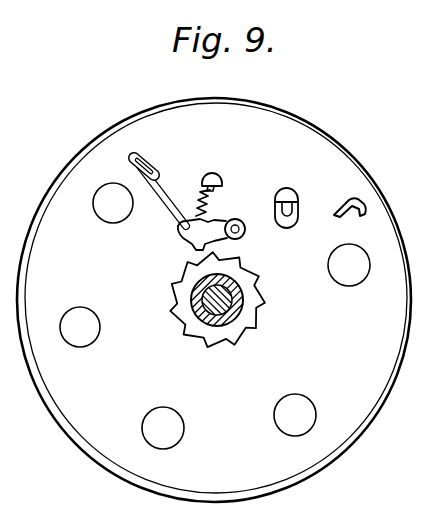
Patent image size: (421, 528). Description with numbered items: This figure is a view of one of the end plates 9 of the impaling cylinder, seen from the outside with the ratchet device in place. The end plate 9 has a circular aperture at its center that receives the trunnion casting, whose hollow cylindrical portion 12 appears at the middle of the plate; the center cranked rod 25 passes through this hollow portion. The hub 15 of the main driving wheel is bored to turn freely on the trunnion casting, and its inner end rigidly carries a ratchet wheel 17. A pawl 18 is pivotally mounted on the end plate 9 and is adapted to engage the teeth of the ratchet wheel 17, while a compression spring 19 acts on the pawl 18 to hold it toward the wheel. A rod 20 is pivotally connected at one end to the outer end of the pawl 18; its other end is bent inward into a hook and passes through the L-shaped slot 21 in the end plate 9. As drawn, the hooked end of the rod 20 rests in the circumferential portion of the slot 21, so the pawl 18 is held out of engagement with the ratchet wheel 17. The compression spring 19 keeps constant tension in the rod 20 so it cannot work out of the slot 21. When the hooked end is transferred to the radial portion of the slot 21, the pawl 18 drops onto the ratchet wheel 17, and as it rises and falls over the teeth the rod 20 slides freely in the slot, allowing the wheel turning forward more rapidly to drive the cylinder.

The end plate 9 is at (214, 300).
The hollow cylindrical portion 12 is at (219, 317).
The hub 15 is at (240, 278).
The ratchet wheel 17 is at (252, 322).
The pawl 18 is at (214, 221).
The compression spring 19 is at (196, 212).
The rod 20 is at (164, 204).
The L-shaped slot 21 is at (139, 153).
The center cranked rod 25 is at (238, 296).